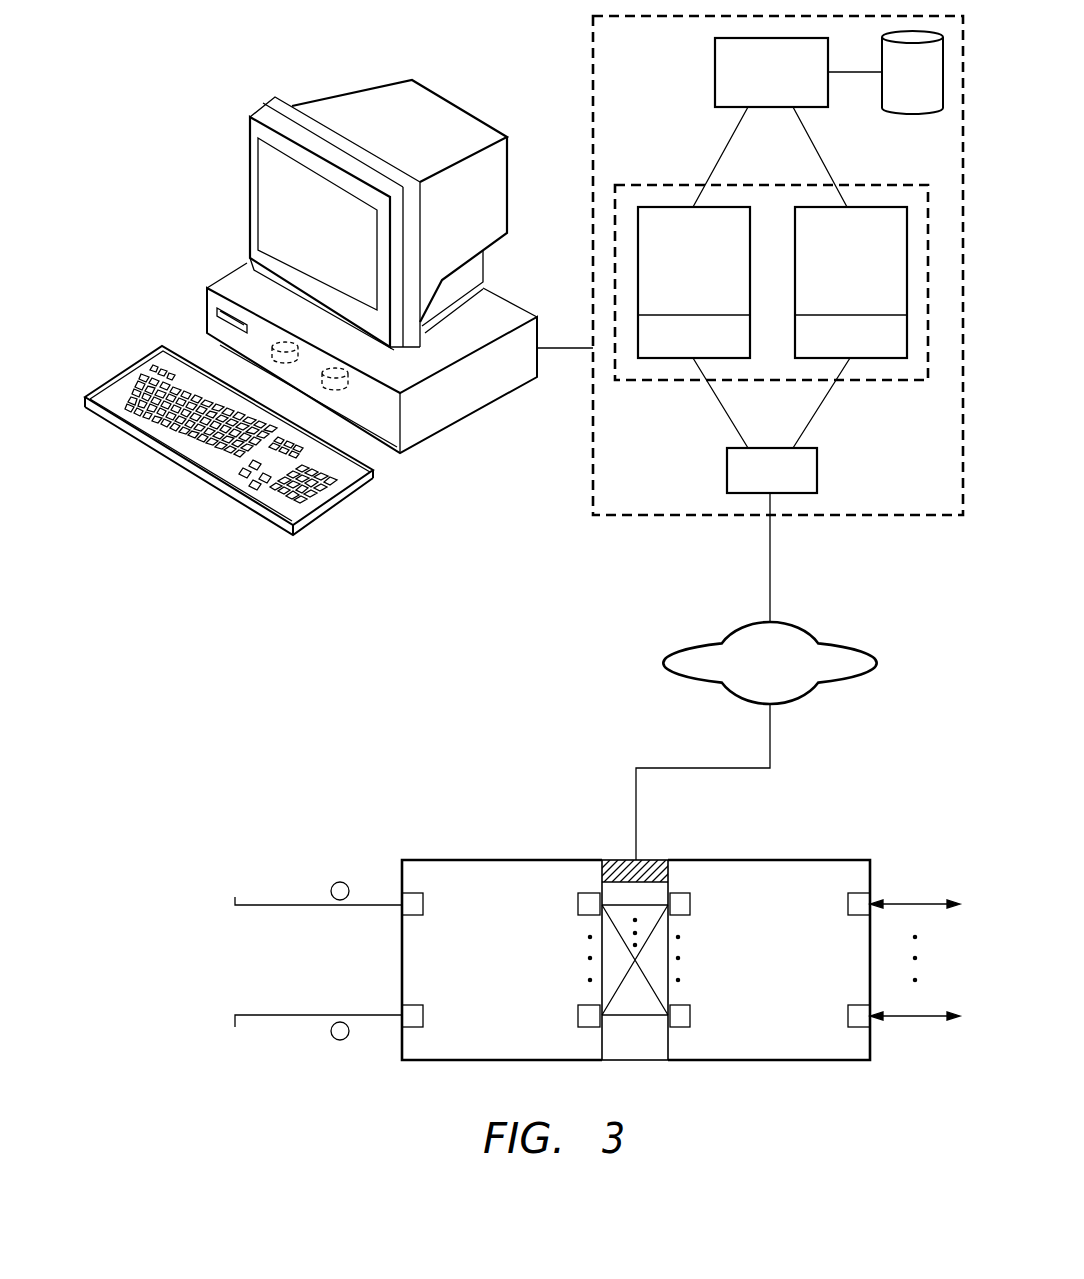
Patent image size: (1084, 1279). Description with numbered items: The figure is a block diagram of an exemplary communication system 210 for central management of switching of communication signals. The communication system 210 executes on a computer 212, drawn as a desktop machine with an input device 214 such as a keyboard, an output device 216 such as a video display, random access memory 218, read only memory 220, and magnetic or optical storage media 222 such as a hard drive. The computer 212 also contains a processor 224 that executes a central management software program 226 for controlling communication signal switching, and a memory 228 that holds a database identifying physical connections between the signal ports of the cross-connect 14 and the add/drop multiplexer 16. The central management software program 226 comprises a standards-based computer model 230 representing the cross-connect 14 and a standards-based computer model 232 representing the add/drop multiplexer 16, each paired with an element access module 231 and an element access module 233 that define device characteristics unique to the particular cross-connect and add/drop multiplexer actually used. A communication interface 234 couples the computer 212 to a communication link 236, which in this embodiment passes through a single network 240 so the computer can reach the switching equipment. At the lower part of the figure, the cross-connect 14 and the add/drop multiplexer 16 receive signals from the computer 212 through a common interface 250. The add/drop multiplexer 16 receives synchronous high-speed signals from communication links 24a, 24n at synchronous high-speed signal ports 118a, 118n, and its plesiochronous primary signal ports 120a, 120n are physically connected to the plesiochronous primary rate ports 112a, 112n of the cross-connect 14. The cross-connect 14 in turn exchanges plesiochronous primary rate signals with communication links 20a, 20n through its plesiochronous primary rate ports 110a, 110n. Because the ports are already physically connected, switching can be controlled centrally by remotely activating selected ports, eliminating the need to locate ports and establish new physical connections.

The cross-connect 14 is at (772, 858).
The add/drop multiplexer 16 is at (495, 860).
The communication link 20a is at (937, 900).
The communication link 20n is at (922, 1018).
The communication link 24a is at (233, 900).
The communication link 24n is at (232, 1023).
The plesiochronous primary rate port 110a is at (845, 913).
The plesiochronous primary rate port 110n is at (845, 1028).
The plesiochronous primary rate port 112a is at (692, 898).
The plesiochronous primary rate port 112n is at (692, 1007).
The synchronous high-speed signal port 118a is at (424, 897).
The synchronous high-speed signal port 118n is at (424, 1005).
The plesiochronous primary signal port 120a is at (568, 913).
The plesiochronous primary signal port 120n is at (568, 1028).
The communication system 210 is at (366, 655).
The computer 212 is at (212, 165).
The input device 214 is at (338, 508).
The output device 216 is at (380, 93).
The random access memory 218 is at (312, 346).
The read only memory 220 is at (347, 383).
The storage media 222 is at (213, 313).
The processor 224 is at (752, 87).
The central management software program 226 is at (875, 383).
The memory 228 is at (897, 112).
The computer model 230 is at (834, 279).
The element access module 231 is at (834, 352).
The computer model 232 is at (677, 279).
The element access module 233 is at (677, 352).
The communication interface 234 is at (755, 484).
The communication link 236 is at (770, 573).
The network 240 is at (853, 638).
The common interface 250 is at (657, 853).